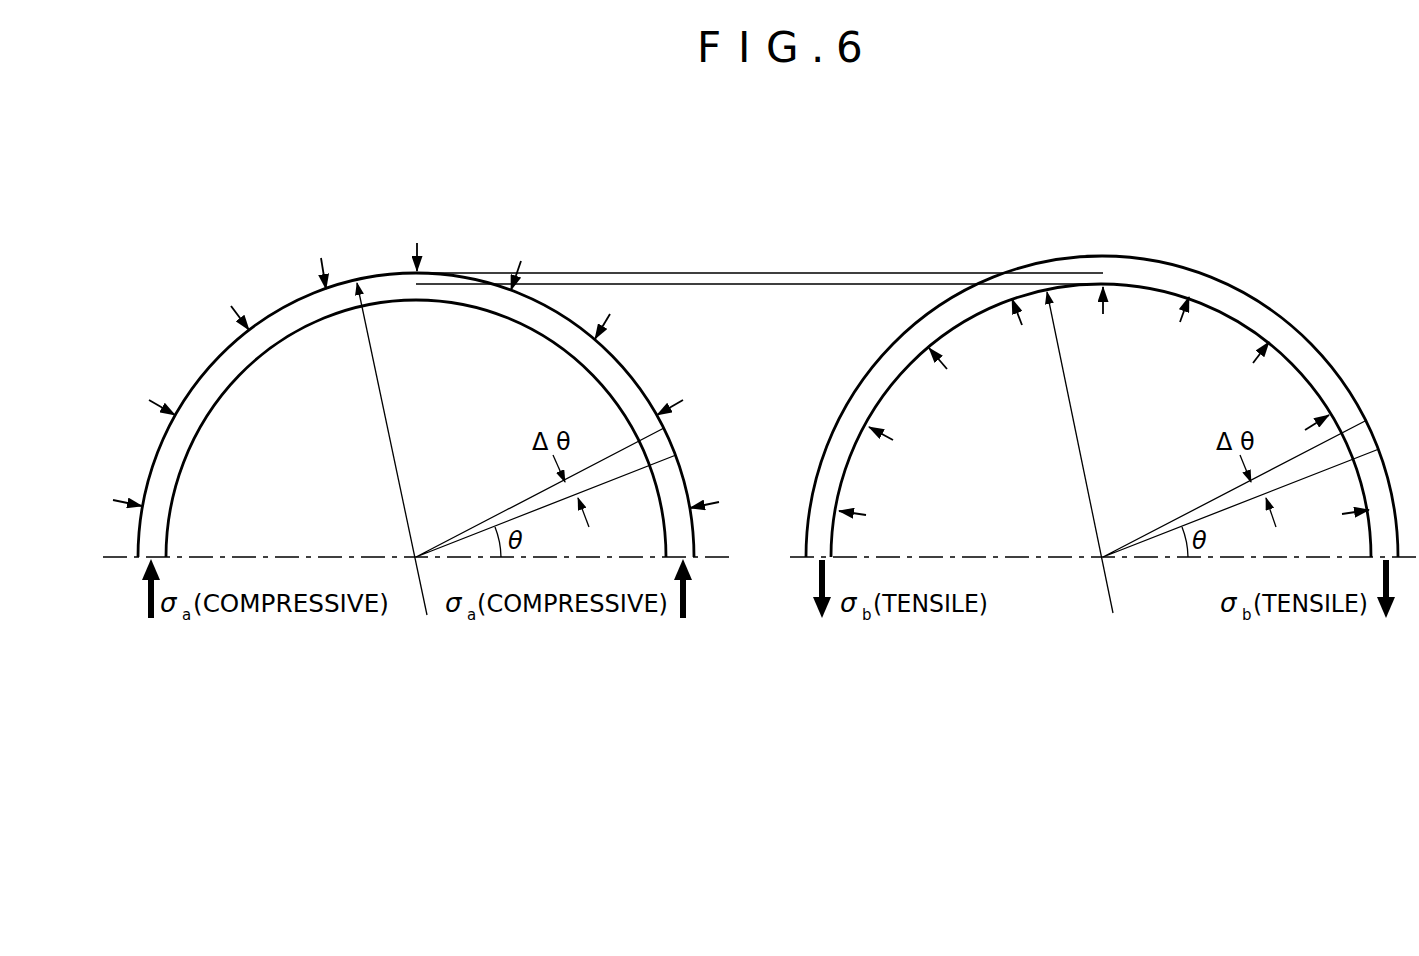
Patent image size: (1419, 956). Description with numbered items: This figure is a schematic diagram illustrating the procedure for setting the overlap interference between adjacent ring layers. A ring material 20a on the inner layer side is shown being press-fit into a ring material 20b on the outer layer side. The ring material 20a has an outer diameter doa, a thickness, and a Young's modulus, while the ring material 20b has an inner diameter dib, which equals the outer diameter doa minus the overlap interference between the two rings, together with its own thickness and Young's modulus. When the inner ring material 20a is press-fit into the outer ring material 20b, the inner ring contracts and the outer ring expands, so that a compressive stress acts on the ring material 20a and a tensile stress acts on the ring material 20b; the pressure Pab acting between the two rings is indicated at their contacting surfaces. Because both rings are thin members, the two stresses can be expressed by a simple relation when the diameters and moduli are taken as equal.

The ring material on the inner layer side 20a is at (273, 304).
The ring material on the outer layer side 20b is at (1284, 308).
The contact pressure between members Pab is at (760, 281).
The outer diameter of the ring material on the inner layer side doa is at (405, 466).
The inner diameter of the ring material on the outer layer side dib is at (1090, 470).